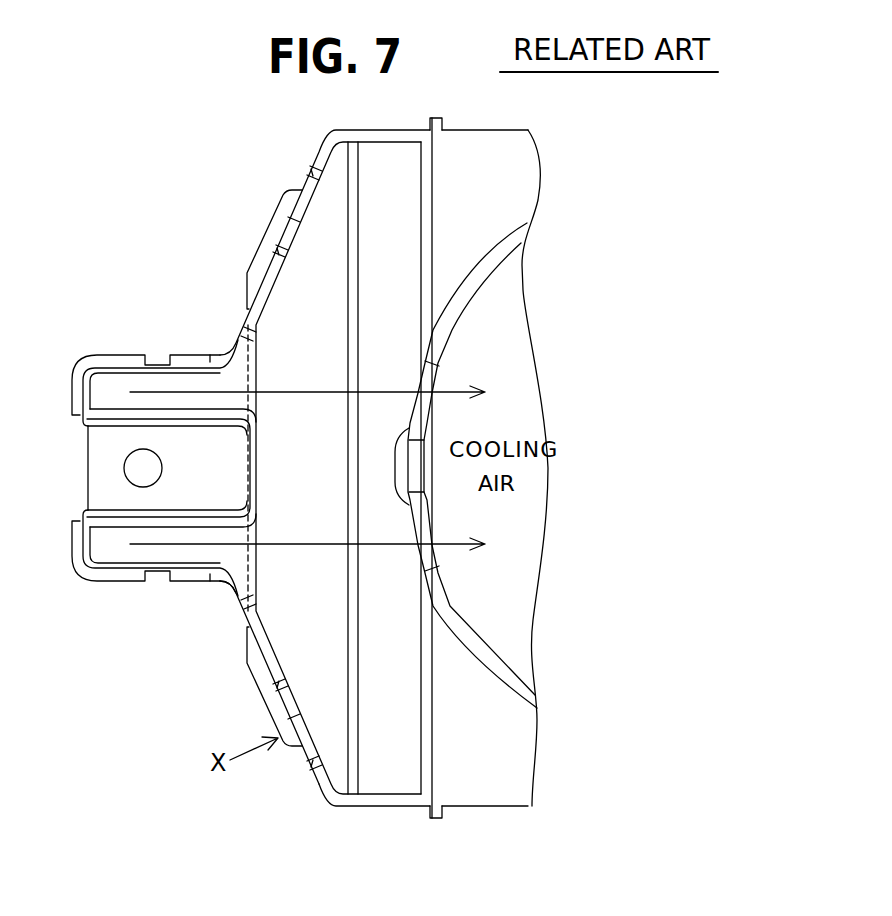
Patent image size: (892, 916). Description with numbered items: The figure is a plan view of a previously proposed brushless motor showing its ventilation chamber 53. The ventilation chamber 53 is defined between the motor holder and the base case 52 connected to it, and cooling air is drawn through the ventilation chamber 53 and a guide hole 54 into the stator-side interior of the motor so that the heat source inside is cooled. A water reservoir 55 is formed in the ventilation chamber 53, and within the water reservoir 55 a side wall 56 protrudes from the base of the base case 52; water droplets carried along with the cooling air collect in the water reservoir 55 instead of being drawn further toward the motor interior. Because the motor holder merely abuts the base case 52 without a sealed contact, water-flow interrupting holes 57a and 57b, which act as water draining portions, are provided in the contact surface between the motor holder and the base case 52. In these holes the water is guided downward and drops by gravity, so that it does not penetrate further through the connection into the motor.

The base case 52 is at (118, 576).
The ventilation chamber 53 is at (268, 352).
The guide hole 54 is at (445, 369).
The water reservoir 55 is at (242, 613).
The side wall 56 is at (360, 655).
The water-flow interrupting hole 57a is at (277, 248).
The water-flow interrupting hole 57b is at (312, 172).